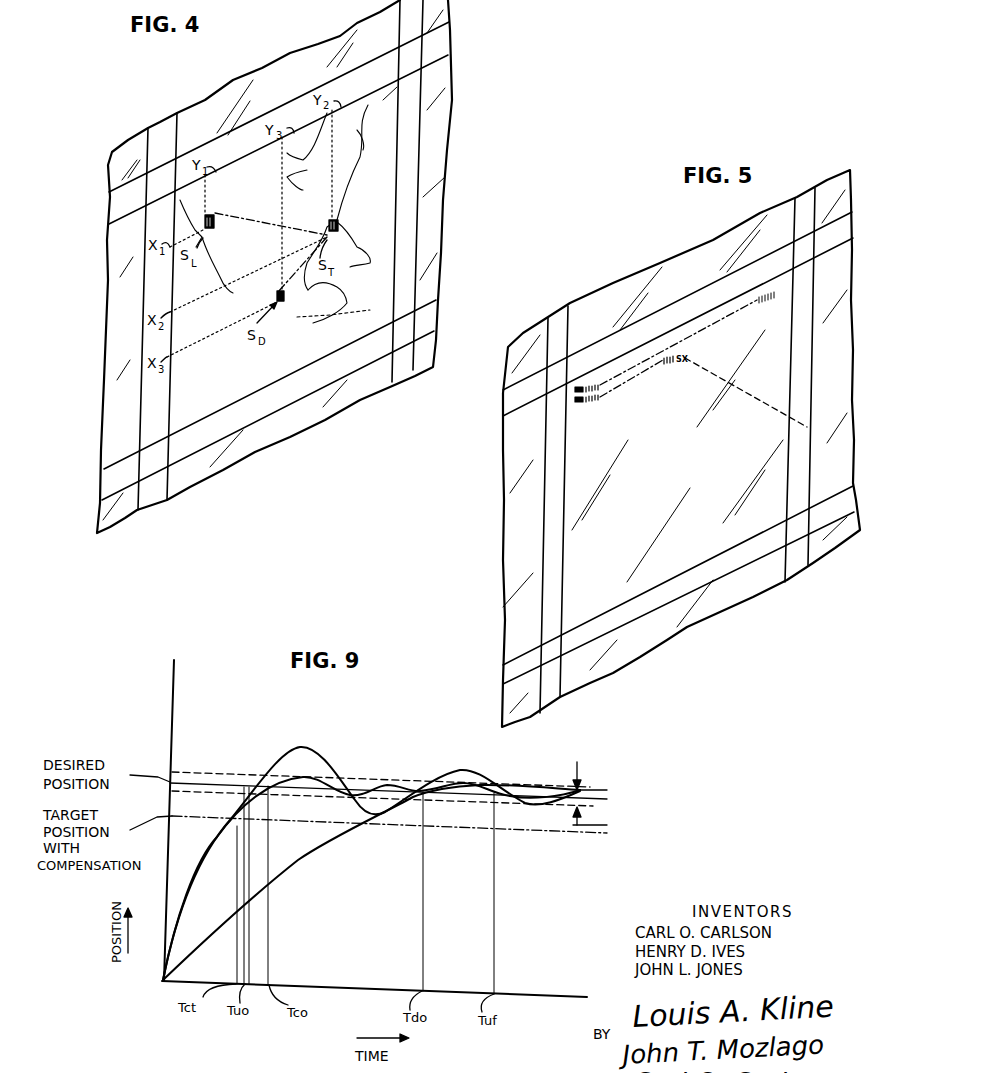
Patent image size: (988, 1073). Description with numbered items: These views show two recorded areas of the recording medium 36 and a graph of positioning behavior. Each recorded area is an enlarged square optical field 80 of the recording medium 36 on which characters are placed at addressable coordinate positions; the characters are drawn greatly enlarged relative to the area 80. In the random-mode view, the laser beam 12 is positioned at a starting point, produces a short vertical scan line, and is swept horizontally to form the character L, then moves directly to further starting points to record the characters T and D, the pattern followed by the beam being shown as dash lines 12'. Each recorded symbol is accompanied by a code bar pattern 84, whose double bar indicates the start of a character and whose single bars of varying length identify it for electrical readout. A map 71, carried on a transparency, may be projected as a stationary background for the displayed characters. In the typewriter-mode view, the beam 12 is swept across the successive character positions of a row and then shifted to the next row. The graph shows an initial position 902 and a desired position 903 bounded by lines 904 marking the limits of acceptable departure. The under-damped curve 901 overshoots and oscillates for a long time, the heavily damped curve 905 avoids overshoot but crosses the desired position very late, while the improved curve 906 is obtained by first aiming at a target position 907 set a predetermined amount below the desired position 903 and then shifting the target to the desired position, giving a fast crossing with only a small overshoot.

In FIG. 4, the optical field 80 is at (398, 173).
In FIG. 5, the optical field 80 is at (757, 290).
In FIG. 4, the code bar pattern 84 is at (213, 227).
In FIG. 4, the map 71 is at (375, 247).
In FIG. 4, the dash lines 12' is at (271, 249).
In FIG. 5, the beam 12 is at (746, 394).
In FIG. 5, the recording medium 36 is at (774, 297).
In FIG. 9, the under-damped response curve 901 is at (318, 749).
In FIG. 9, the initial position line 902 is at (160, 982).
In FIG. 9, the desired position line 903 is at (204, 781).
In FIG. 9, the acceptable departure limit lines 904 is at (486, 809).
In FIG. 9, the heavily damped response curve 905 is at (284, 871).
In FIG. 9, the improved response curve 906 is at (217, 837).
In FIG. 9, the initial target position 907 is at (222, 819).